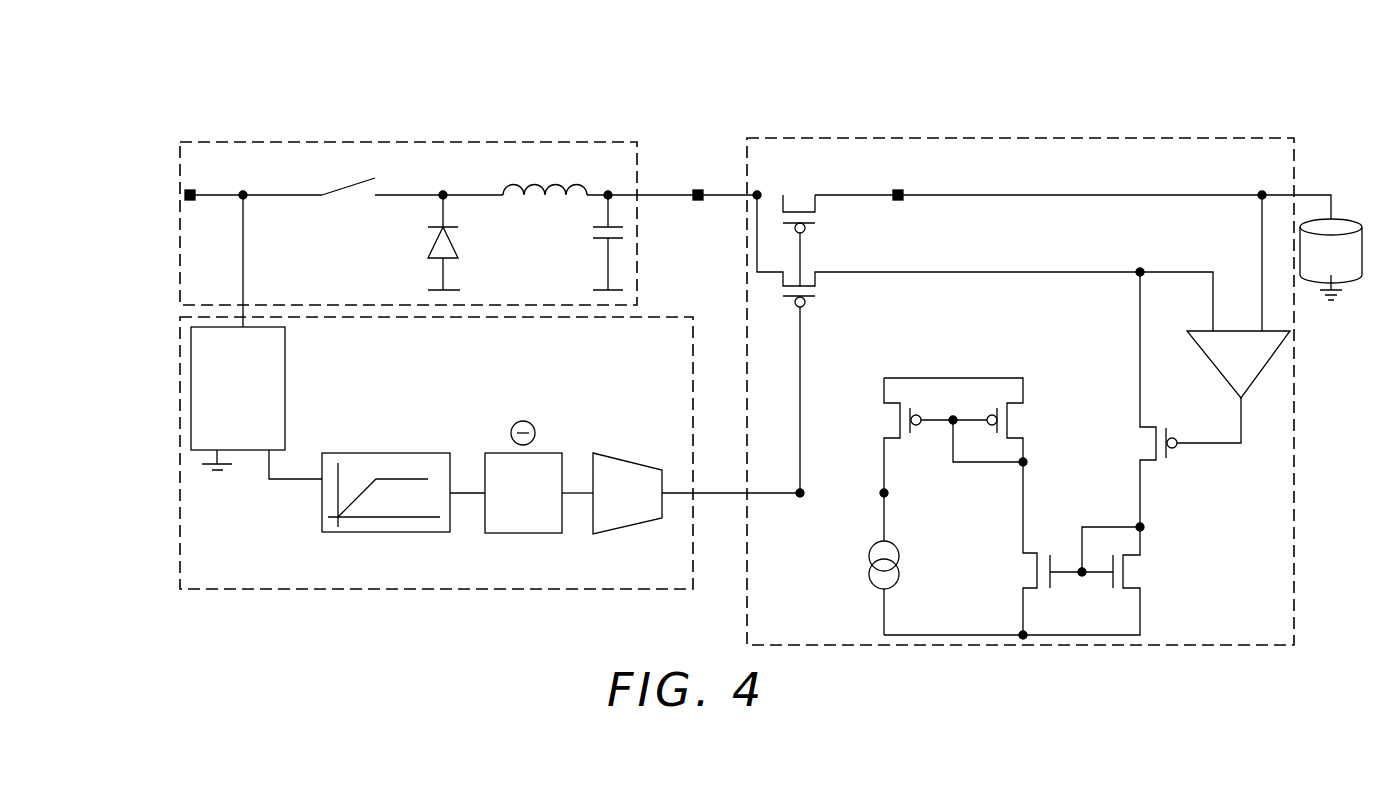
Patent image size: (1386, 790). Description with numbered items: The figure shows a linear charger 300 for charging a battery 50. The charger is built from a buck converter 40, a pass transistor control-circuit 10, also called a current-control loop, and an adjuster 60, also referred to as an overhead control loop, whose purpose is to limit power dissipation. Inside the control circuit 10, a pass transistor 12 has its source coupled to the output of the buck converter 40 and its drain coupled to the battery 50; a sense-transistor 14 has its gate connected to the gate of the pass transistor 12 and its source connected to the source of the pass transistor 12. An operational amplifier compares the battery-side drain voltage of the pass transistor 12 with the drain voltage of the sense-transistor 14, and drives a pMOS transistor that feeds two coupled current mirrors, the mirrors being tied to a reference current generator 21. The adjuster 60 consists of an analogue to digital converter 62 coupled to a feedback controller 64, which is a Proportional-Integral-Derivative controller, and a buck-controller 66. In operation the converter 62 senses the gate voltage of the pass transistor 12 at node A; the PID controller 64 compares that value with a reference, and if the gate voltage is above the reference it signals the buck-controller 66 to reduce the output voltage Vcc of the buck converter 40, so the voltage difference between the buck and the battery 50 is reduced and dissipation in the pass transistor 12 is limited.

The linear charger 300 is at (297, 70).
The buck converter 40 is at (257, 140).
The adjuster 60 is at (250, 590).
The buck-controller 66 is at (287, 385).
The feedback controller 64 is at (550, 452).
The analogue to digital converter 62 is at (635, 460).
The pass transistor control-circuit 10 is at (1295, 533).
The pass transistor 12 is at (800, 202).
The sense-transistor 14 is at (777, 293).
The battery 50 is at (1347, 220).
The current generator 21 is at (872, 585).